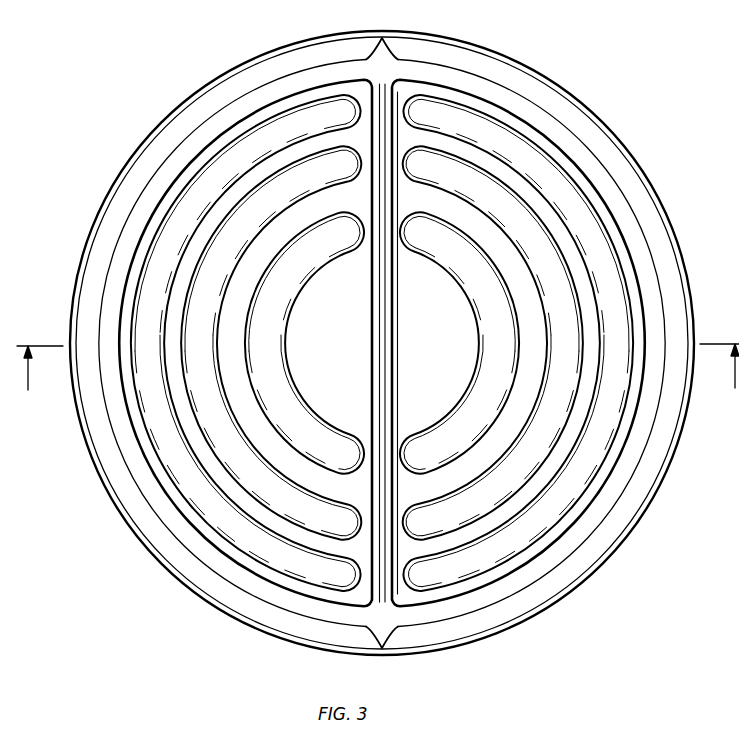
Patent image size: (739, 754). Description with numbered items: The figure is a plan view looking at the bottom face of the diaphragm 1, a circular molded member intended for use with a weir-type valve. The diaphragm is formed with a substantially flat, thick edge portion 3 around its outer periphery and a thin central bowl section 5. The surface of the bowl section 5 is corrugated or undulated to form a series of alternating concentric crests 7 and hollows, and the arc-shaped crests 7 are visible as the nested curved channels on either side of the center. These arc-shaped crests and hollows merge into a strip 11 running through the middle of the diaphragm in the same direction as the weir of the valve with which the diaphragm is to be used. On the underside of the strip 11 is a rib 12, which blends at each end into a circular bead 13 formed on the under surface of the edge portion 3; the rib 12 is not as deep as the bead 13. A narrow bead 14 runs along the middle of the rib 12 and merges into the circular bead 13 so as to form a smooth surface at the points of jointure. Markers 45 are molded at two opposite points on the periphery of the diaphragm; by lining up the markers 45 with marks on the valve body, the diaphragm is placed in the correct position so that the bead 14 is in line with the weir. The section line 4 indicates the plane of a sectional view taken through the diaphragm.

The plate assembly 1 is at (632, 542).
The edge portion 3 is at (672, 294).
The section line 4- 4 is at (378, 379).
The bowl section 5 is at (512, 275).
The crests 7 is at (382, 343).
The strip 11 is at (405, 488).
The rib 12 is at (390, 330).
The circular bead 13 is at (120, 440).
The narrow bead 14 is at (384, 368).
The markers 45 is at (385, 37).